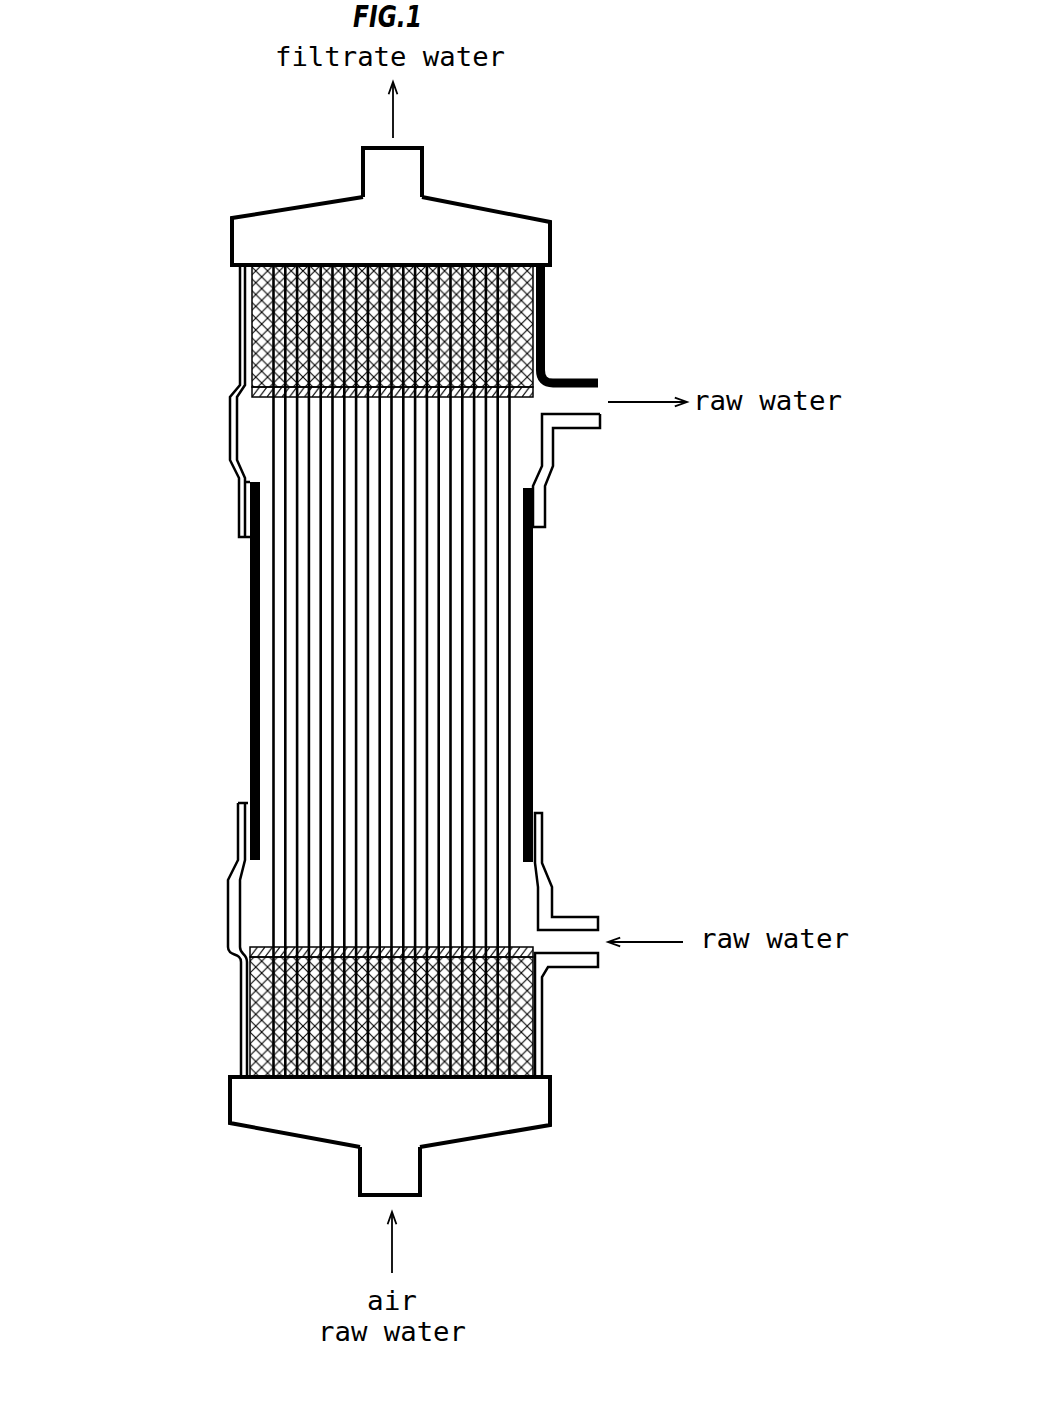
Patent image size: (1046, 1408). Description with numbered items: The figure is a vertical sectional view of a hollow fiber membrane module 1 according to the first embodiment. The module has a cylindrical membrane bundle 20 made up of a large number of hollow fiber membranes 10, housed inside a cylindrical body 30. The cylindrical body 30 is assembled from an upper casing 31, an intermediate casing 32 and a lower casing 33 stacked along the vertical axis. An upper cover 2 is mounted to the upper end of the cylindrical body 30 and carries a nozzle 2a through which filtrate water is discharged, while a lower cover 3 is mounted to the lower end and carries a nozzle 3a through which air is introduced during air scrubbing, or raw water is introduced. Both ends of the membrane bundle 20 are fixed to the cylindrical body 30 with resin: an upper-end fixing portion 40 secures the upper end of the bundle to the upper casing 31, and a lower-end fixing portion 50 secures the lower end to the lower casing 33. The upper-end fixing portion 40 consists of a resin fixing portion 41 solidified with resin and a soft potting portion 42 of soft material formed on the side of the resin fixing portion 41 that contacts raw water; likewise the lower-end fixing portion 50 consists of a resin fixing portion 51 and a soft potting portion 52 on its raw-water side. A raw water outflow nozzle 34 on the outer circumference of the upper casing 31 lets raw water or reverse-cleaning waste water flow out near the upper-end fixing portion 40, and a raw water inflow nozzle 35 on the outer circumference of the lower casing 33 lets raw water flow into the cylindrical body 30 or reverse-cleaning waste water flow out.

The hollow fiber membrane module 1 is at (623, 137).
The upper cover 2 is at (513, 213).
The nozzle 2a is at (423, 163).
The lower cover 3 is at (308, 1137).
The nozzle 3a is at (422, 1172).
The hollow fiber membranes 10 is at (293, 663).
The membrane bundle 20 is at (268, 430).
The cylindrical body 30 is at (565, 290).
The upper casing 31 is at (545, 320).
The intermediate casing 32 is at (535, 643).
The lower casing 33 is at (552, 884).
The raw water outflow nozzle 34 is at (592, 377).
The raw water inflow nozzle 35 is at (590, 925).
The upper-end fixing portion 40 is at (143, 255).
The resin fixing portion 41 is at (260, 290).
The soft potting portion 42 is at (245, 390).
The lower-end fixing portion 50 is at (143, 973).
The resin fixing portion 51 is at (258, 1008).
The soft potting portion 52 is at (240, 950).